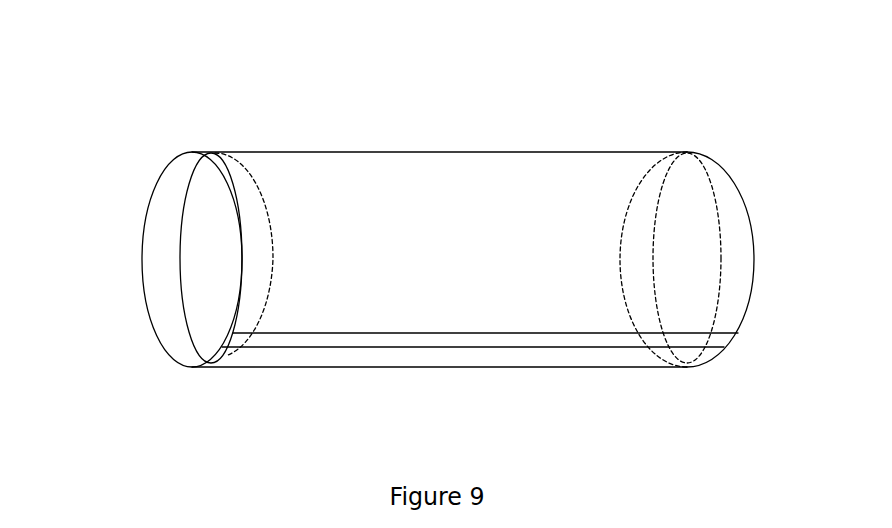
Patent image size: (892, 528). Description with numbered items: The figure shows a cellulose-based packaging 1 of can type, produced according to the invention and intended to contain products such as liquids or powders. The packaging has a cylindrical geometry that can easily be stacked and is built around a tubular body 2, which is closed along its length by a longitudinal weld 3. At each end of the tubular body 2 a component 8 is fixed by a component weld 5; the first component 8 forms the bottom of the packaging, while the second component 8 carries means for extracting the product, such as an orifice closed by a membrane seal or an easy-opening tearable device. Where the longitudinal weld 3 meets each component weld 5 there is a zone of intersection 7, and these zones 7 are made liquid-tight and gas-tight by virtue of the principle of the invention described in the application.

The cellulose-based packaging 1 is at (384, 129).
The tubular body 2 is at (550, 163).
The longitudinal weld 3 is at (542, 343).
The component weld 5 is at (178, 340).
The zone of intersection of the longitudinal weld and of the component weld 7 is at (238, 340).
The component 8 is at (205, 247).